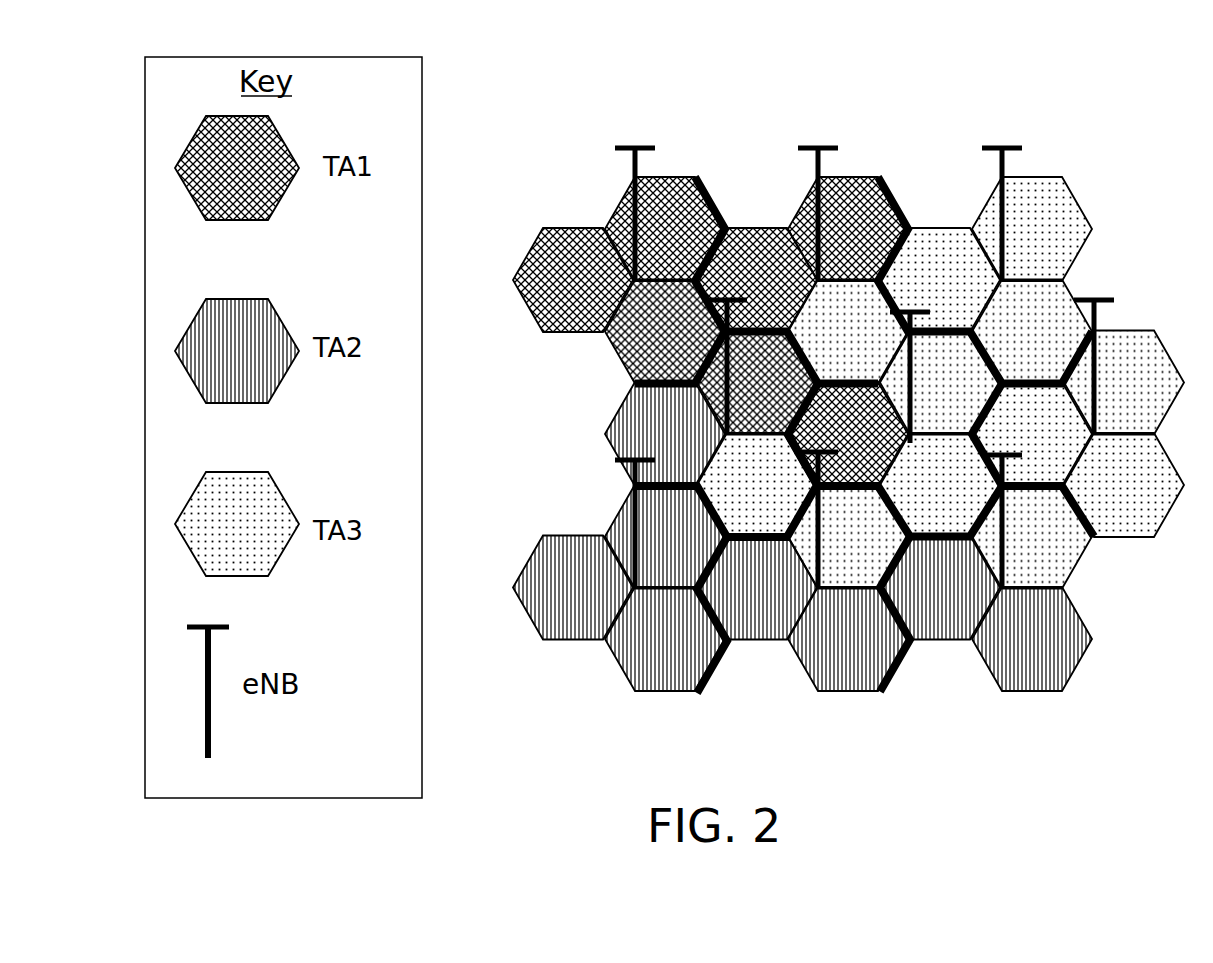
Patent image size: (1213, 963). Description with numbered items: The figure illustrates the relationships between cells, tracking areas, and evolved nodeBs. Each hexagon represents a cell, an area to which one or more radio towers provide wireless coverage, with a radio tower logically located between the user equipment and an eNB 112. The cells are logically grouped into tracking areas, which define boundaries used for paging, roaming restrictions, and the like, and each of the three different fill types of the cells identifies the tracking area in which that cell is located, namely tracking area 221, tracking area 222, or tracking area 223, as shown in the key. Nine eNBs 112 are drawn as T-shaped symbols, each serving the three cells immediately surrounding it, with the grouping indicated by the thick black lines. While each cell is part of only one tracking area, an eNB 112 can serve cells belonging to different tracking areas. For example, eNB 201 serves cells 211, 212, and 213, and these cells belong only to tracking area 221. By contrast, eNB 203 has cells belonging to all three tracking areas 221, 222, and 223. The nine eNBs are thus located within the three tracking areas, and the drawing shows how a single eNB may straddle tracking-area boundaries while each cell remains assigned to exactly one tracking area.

The eNB 201 is at (634, 138).
The eNB 203 is at (727, 292).
The cell 211 is at (617, 210).
The cell 212 is at (534, 239).
The cell 213 is at (616, 352).
The tracking area 221 is at (283, 208).
The tracking area 222 is at (288, 375).
The tracking area 223 is at (288, 555).
The eNB 112 is at (237, 627).